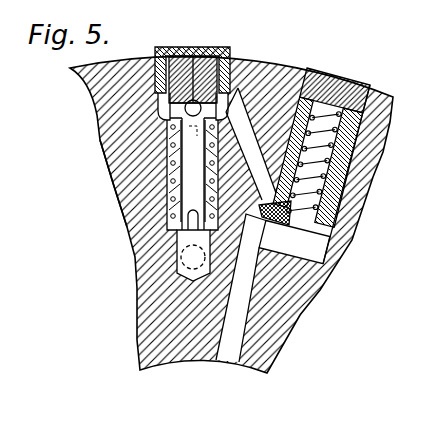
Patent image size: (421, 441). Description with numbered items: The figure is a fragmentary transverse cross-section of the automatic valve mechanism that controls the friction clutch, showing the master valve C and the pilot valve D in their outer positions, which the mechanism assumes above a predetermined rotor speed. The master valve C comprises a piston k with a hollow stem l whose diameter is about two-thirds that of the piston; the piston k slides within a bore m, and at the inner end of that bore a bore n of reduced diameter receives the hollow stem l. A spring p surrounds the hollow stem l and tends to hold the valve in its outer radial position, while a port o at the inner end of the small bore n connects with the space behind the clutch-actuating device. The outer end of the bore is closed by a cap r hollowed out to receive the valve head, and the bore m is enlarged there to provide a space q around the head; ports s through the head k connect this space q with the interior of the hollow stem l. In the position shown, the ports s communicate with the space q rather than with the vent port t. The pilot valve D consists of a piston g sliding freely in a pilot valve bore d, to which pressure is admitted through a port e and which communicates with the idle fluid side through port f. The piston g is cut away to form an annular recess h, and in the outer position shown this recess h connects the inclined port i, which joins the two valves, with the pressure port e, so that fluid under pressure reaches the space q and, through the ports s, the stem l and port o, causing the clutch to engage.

The cap r is at (172, 47).
The master valve C is at (191, 56).
The ports s is at (194, 100).
The piston k is at (237, 88).
The space q is at (160, 108).
The bore m is at (169, 168).
The vent port t is at (193, 174).
The hollow stem l is at (167, 172).
The spring p is at (122, 219).
The bore n is at (176, 240).
The port o is at (147, 270).
The port i is at (258, 156).
The pilot valve D is at (335, 83).
The piston g is at (366, 139).
The port e is at (340, 172).
The annular recess h is at (336, 186).
The pilot valve bore d is at (338, 208).
The port f is at (229, 358).